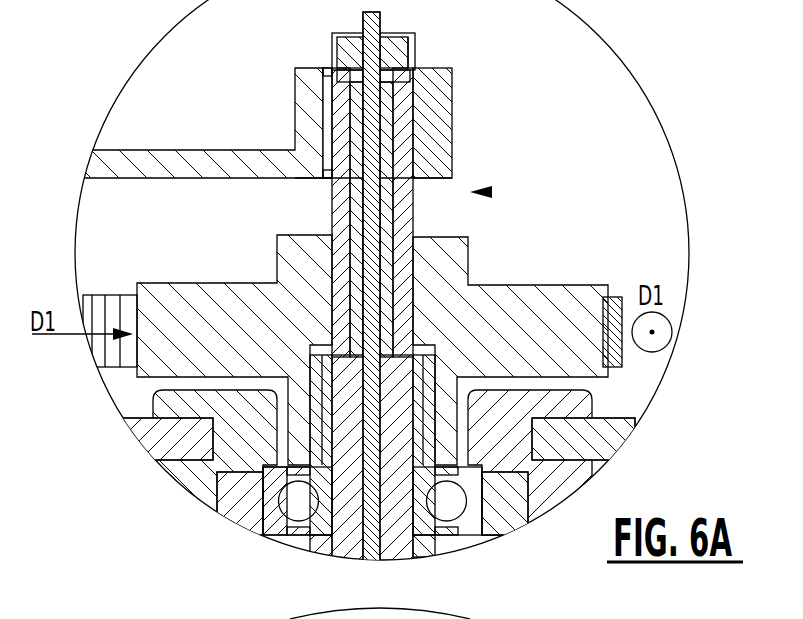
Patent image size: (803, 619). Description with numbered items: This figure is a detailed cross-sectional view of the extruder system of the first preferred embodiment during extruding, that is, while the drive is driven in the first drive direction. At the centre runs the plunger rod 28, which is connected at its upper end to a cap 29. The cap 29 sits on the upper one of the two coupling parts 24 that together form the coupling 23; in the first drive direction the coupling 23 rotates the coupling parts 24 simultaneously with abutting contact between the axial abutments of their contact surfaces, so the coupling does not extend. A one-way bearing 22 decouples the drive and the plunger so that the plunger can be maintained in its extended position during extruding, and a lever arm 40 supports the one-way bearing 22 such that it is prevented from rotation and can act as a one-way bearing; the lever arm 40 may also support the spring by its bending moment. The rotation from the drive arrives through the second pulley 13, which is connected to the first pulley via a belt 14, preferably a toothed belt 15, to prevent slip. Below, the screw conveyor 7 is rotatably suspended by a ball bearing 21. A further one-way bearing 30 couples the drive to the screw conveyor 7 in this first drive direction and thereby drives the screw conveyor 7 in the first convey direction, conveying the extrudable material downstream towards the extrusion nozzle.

The screw conveyor 7 is at (400, 562).
The second pulley 13 is at (545, 302).
The belt 14 is at (126, 275).
The toothed belt 15 is at (107, 310).
The ball bearing 21 is at (345, 190).
The one-way bearing 22 is at (450, 118).
The coupling 23 is at (485, 192).
The coupling parts 24 is at (403, 220).
The plunger rod 28 is at (375, 25).
The cap 29 is at (357, 48).
The further one-way bearing 30 is at (418, 423).
The lever arm 40 is at (227, 163).